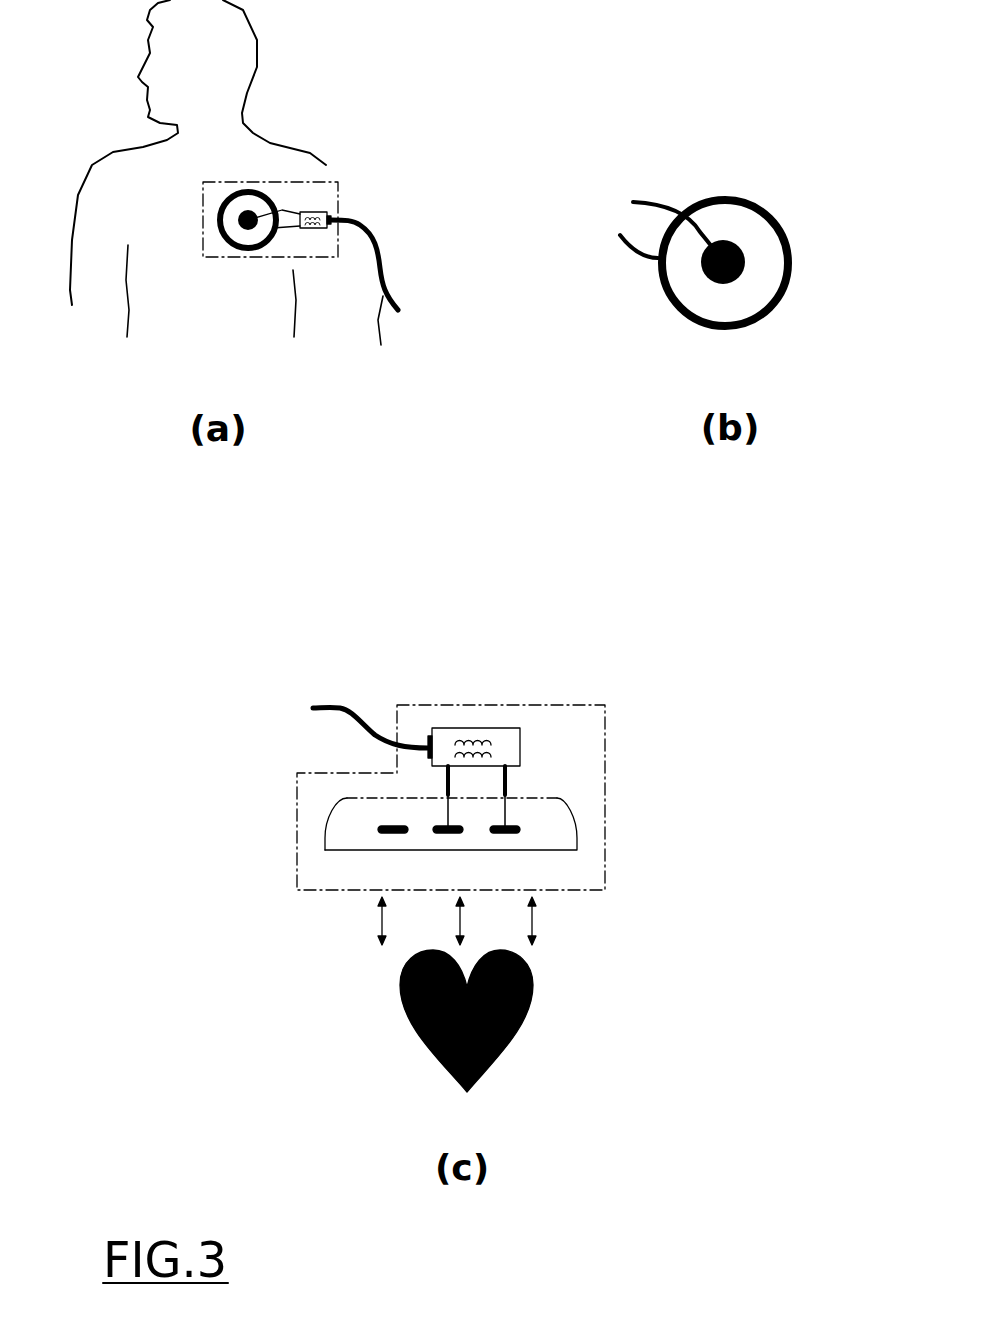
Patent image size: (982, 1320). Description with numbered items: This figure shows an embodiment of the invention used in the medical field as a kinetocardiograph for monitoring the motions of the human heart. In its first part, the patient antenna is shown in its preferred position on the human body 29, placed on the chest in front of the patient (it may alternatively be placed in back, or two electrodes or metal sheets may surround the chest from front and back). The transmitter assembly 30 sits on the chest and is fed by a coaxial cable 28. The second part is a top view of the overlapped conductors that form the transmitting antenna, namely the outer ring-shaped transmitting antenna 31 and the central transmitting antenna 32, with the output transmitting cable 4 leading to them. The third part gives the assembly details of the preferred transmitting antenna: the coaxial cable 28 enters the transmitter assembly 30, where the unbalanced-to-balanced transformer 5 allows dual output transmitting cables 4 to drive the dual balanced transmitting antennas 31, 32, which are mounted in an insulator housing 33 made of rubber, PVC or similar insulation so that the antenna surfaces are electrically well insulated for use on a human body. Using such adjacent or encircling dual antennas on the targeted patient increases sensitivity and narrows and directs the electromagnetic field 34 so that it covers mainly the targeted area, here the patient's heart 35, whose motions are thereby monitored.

The output transmitting cable 4 is at (633, 247).
The unbalanced-to-balanced transformer 5 is at (522, 742).
The coaxial cable 28 is at (347, 712).
The human body 29 is at (226, 172).
The transmitter assembly 30 is at (338, 194).
The transmitting antenna 31 is at (760, 208).
The transmitting antenna 32 is at (747, 267).
The insulator housing 33 is at (343, 827).
The electromagnetic field 34 is at (377, 915).
The patient's heart 35 is at (508, 1043).